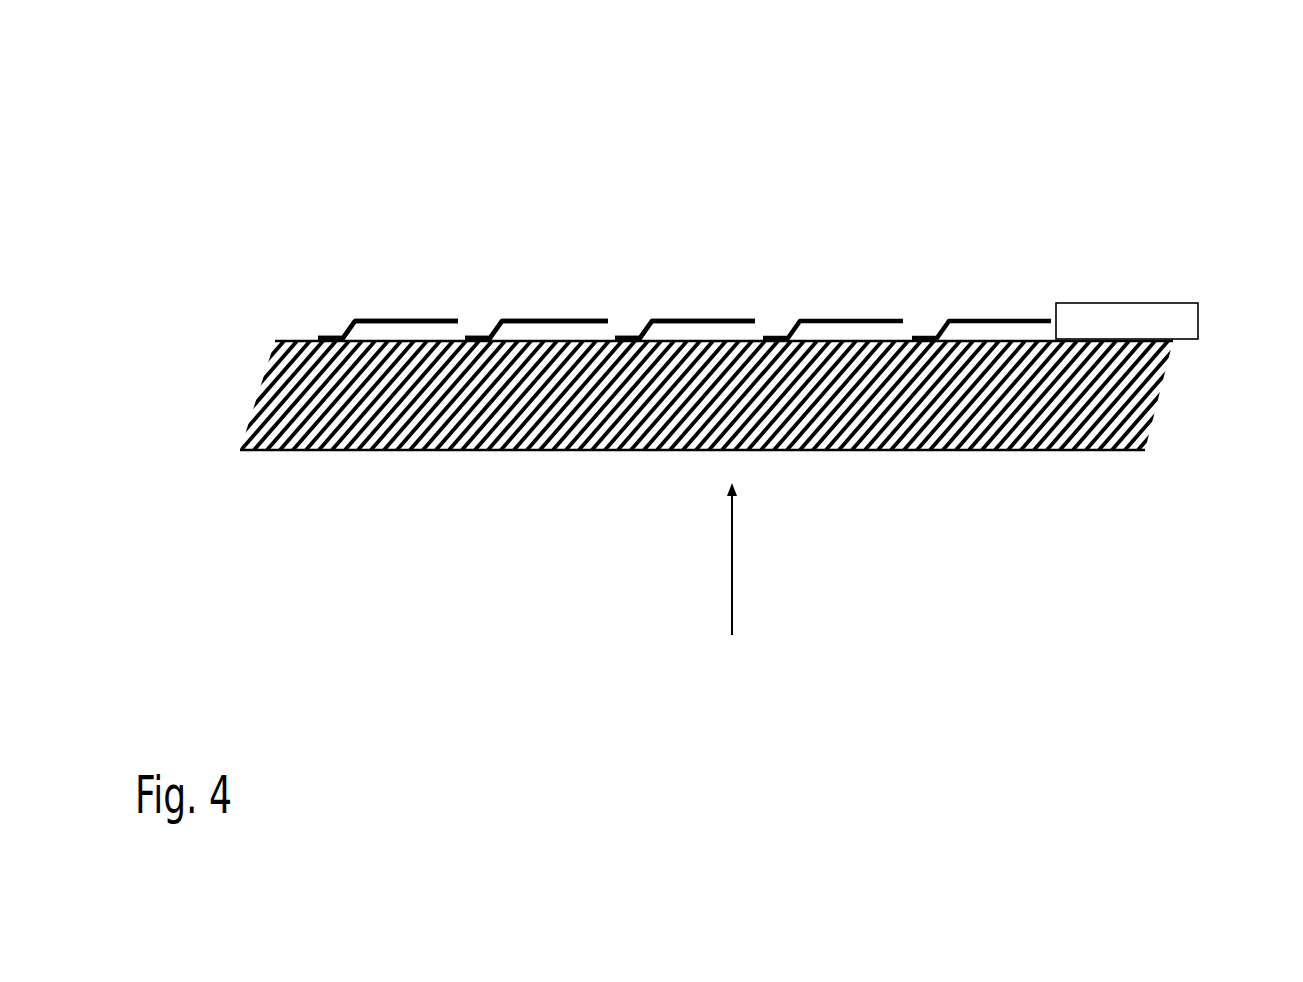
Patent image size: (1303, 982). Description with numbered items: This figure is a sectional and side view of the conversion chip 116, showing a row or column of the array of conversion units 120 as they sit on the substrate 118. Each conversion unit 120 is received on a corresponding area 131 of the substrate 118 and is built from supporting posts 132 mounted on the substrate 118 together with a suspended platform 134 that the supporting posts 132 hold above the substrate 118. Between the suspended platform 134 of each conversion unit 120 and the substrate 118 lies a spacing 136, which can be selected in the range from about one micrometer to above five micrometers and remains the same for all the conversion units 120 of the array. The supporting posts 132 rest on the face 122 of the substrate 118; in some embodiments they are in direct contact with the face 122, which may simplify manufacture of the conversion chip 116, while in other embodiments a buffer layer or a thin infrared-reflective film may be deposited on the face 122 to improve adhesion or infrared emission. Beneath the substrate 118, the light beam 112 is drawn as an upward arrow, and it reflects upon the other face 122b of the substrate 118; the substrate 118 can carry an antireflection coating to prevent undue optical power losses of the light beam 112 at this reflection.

The light beam 112 is at (735, 558).
The conversion chip 116 is at (1079, 143).
The substrate 118 is at (1152, 426).
The conversion units 120 is at (967, 317).
The face of the substrate 122 is at (1170, 338).
The other face of the substrate 122b is at (1062, 451).
The corresponding area of the substrate 131 is at (463, 338).
The supporting posts 132 is at (338, 289).
The suspended platform 134 is at (353, 295).
The spacing 136 is at (714, 335).